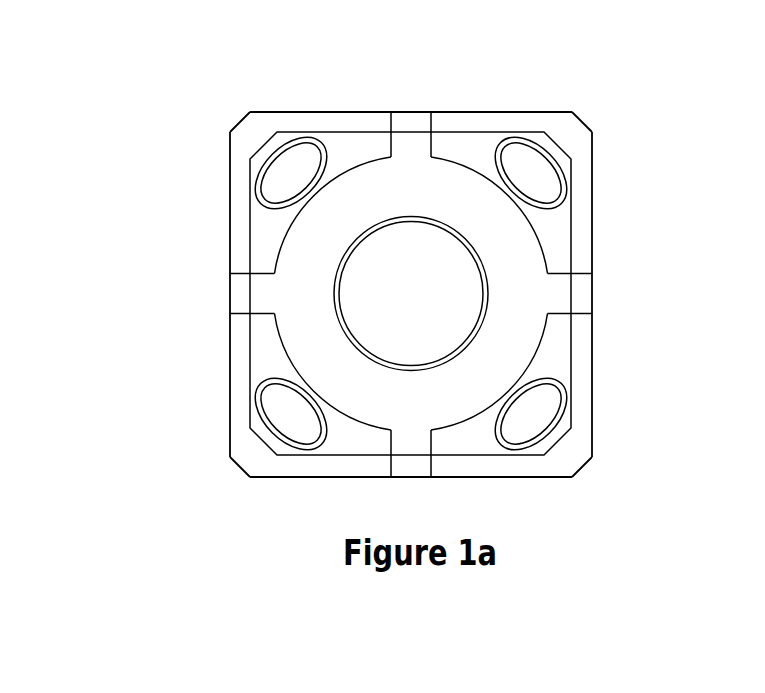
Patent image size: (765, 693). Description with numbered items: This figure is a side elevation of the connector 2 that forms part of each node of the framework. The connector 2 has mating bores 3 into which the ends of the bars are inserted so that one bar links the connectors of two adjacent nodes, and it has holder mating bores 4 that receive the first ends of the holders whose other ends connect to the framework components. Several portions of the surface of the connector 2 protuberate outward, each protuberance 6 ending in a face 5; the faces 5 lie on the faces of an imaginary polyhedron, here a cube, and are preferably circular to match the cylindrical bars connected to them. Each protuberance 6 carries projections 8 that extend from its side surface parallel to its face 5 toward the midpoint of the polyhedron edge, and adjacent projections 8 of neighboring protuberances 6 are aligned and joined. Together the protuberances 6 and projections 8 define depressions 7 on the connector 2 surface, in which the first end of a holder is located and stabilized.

The connector 2 is at (182, 136).
The mating bore 3 is at (483, 268).
The holder mating bore 4 is at (295, 143).
The face 5 is at (523, 112).
The protuberance 6 is at (353, 132).
The depression 7 is at (477, 150).
The projection 8 is at (240, 126).